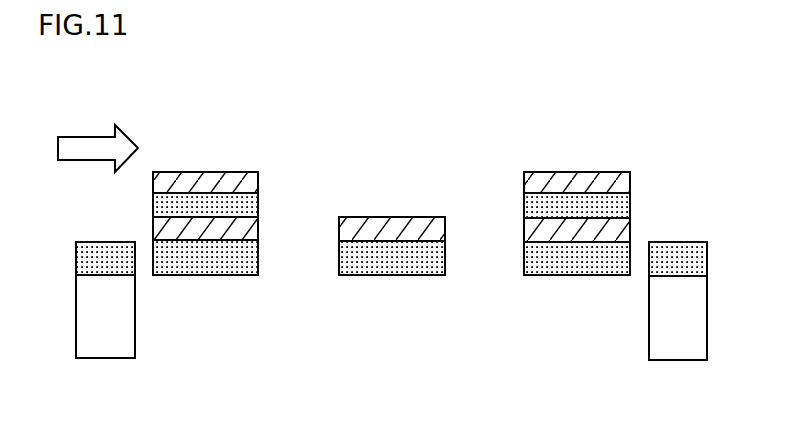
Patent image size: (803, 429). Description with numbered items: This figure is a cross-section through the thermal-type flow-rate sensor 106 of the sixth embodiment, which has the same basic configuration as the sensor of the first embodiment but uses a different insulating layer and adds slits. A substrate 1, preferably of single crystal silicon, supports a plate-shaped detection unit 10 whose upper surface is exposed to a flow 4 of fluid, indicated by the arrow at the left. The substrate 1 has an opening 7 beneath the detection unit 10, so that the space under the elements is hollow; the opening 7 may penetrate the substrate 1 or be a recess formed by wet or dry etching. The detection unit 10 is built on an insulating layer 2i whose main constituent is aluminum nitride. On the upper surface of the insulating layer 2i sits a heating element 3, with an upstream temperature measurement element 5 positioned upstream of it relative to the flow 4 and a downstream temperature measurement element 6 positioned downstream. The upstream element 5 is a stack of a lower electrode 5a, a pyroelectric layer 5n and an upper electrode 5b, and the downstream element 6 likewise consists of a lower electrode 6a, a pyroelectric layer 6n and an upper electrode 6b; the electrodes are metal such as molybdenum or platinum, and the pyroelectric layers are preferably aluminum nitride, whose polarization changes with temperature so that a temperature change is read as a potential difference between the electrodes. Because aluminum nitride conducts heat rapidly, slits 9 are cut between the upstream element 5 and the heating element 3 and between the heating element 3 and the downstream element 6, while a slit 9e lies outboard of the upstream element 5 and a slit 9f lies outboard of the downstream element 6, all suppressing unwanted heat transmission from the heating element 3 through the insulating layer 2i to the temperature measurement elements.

The thermal-type flow-rate sensor 106 is at (178, 99).
The flow 4 is at (88, 137).
The detection unit 10 is at (529, 98).
The upstream temperature measurement element 5 is at (312, 131).
The upper electrode 5b is at (232, 183).
The pyroelectric layer 5n is at (255, 204).
The lower electrode 5a is at (253, 228).
The heating element 3 is at (393, 230).
The insulating layer 2i is at (343, 257).
The downstream temperature measurement element 6 is at (568, 131).
The lower electrode 6a is at (530, 230).
The pyroelectric layer 6n is at (532, 208).
The upper electrode 6b is at (548, 185).
The slit 9e is at (143, 259).
The opening 7 is at (229, 337).
The slit 9 is at (299, 257).
The slit 9f is at (640, 258).
The substrate 1 is at (678, 347).